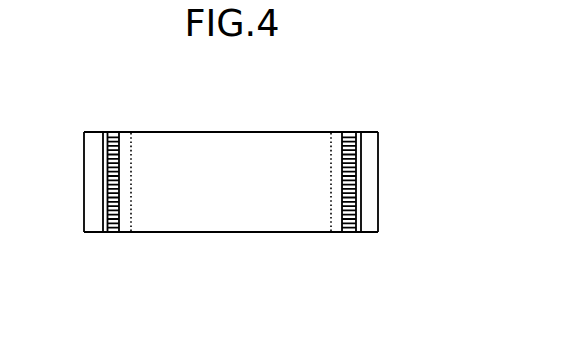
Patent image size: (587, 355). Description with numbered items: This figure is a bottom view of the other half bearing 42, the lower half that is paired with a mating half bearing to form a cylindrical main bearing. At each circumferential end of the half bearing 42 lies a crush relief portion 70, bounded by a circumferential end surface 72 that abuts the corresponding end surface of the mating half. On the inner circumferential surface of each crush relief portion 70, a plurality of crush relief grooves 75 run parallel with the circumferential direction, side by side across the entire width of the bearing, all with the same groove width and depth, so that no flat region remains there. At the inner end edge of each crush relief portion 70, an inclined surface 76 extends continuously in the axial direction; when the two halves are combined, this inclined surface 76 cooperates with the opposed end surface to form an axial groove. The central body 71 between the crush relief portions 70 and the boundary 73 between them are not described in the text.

The half bearing 42 is at (350, 102).
The crush relief portion 70 is at (112, 234).
The electrolyte / separator body 71 is at (223, 233).
The circumferential end surface 72 is at (93, 233).
The boundary line 73 is at (127, 131).
The crush relief groove 75 is at (107, 153).
The inclined surface 76 is at (100, 234).